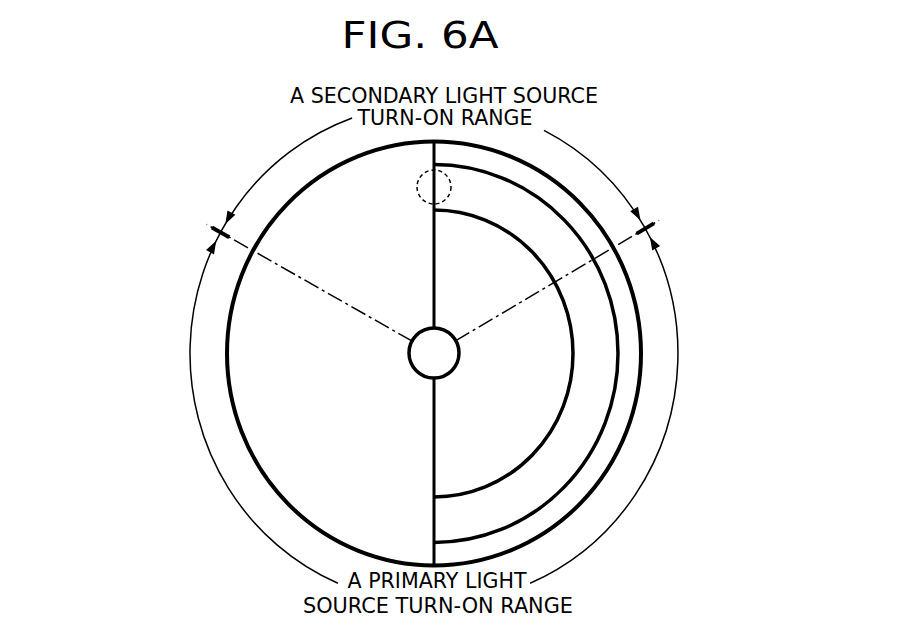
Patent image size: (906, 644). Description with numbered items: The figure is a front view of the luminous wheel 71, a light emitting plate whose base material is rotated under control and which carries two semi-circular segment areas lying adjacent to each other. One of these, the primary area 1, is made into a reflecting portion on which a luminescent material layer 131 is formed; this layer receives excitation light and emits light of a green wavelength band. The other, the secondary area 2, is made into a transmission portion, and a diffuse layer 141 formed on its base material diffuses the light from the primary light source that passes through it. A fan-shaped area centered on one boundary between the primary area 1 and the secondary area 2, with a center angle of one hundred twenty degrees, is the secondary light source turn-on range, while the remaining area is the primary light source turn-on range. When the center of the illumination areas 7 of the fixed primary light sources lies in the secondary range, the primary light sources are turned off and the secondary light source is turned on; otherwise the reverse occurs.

The primary area 1 is at (593, 468).
The secondary area 2 is at (278, 473).
The illumination area 7 is at (417, 187).
The luminous wheel 71 is at (573, 195).
The luminescent material layer 131 is at (593, 412).
The diffuse layer 141 is at (287, 413).